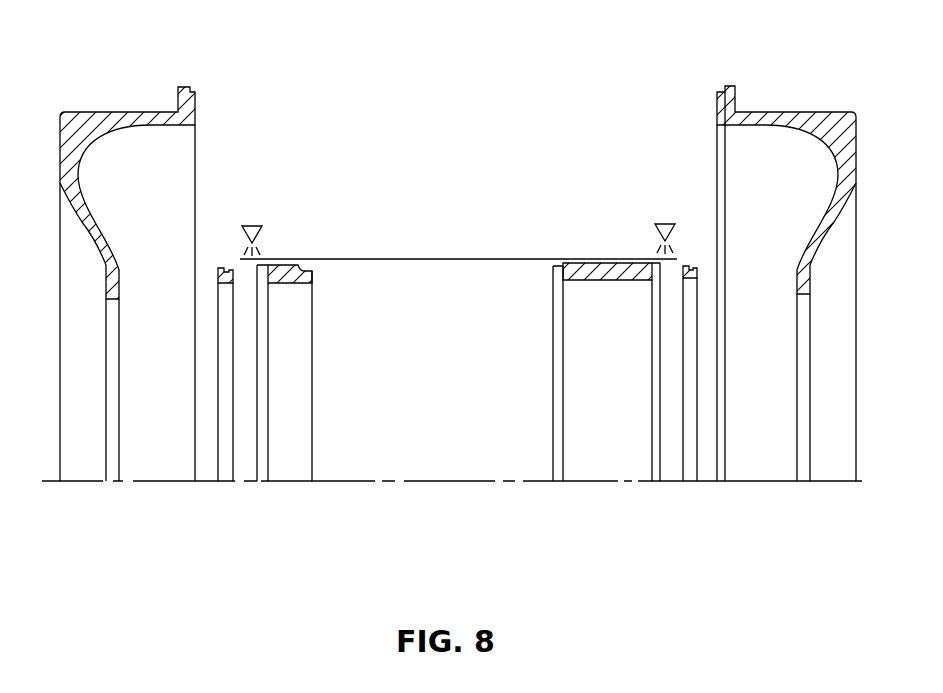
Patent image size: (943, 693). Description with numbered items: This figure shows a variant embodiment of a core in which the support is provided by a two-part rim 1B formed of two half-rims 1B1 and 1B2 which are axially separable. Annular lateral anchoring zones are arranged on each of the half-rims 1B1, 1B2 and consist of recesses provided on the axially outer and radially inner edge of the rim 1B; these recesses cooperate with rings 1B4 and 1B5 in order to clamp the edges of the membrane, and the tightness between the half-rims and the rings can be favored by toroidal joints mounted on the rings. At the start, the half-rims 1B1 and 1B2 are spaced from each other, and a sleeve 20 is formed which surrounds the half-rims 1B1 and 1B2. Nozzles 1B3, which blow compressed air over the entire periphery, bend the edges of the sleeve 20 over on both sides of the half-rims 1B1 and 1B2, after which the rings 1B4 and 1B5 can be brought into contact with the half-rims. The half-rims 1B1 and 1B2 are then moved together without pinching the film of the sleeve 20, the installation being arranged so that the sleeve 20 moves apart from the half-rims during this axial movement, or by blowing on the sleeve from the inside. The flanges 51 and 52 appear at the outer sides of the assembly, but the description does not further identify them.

The first rim flange 51 is at (82, 133).
The second rim flange 52 is at (838, 128).
The sleeve 20 is at (450, 259).
The rim 1B is at (437, 363).
The half-rim 1B1 is at (284, 466).
The half-rim 1B2 is at (593, 466).
The nozzles 1B3 is at (254, 224).
The ring 1B4 is at (227, 473).
The ring 1B5 is at (230, 265).